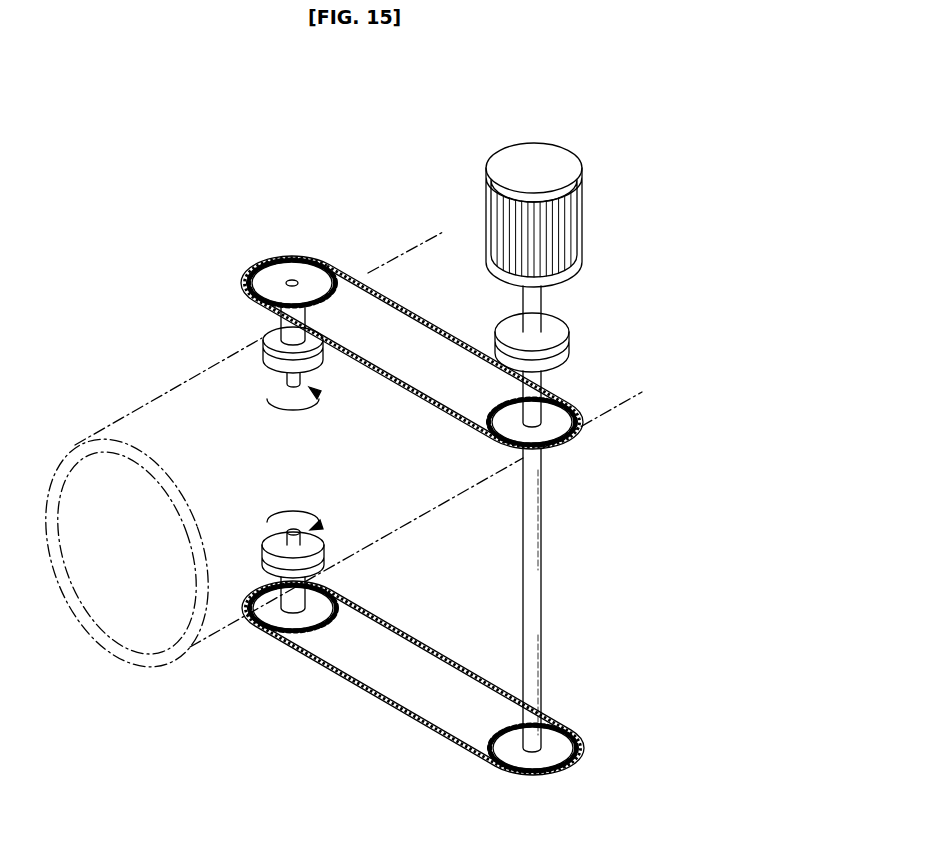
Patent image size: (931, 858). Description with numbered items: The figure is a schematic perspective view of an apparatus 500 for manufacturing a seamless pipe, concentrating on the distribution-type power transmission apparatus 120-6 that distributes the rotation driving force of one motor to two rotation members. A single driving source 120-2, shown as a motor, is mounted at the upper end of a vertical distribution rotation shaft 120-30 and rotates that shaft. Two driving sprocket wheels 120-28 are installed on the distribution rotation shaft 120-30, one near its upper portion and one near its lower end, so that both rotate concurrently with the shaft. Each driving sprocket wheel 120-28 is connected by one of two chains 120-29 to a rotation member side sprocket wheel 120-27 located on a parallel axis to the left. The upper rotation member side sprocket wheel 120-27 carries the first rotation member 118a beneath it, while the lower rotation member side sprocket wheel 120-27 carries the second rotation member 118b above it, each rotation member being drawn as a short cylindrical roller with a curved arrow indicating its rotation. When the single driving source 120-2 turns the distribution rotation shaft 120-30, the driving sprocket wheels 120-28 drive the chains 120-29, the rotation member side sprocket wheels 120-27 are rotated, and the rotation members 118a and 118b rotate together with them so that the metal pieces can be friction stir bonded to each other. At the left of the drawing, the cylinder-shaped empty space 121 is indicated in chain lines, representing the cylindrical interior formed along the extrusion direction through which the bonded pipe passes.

The apparatus of manufacturing a seamless pipe 500 is at (108, 87).
The distribution-type power transmission apparatus 120-6 is at (208, 163).
The single driving source 120-2 is at (578, 200).
The rotation member side sprocket wheels 120-27 is at (305, 272).
The driving sprocket wheels 120-28 is at (563, 420).
The chains 120-29 is at (381, 373).
The distribution rotation shaft 120-30 is at (536, 581).
The rotation member 118a is at (265, 352).
The rotation member 118b is at (270, 550).
The empty space 121 is at (122, 648).